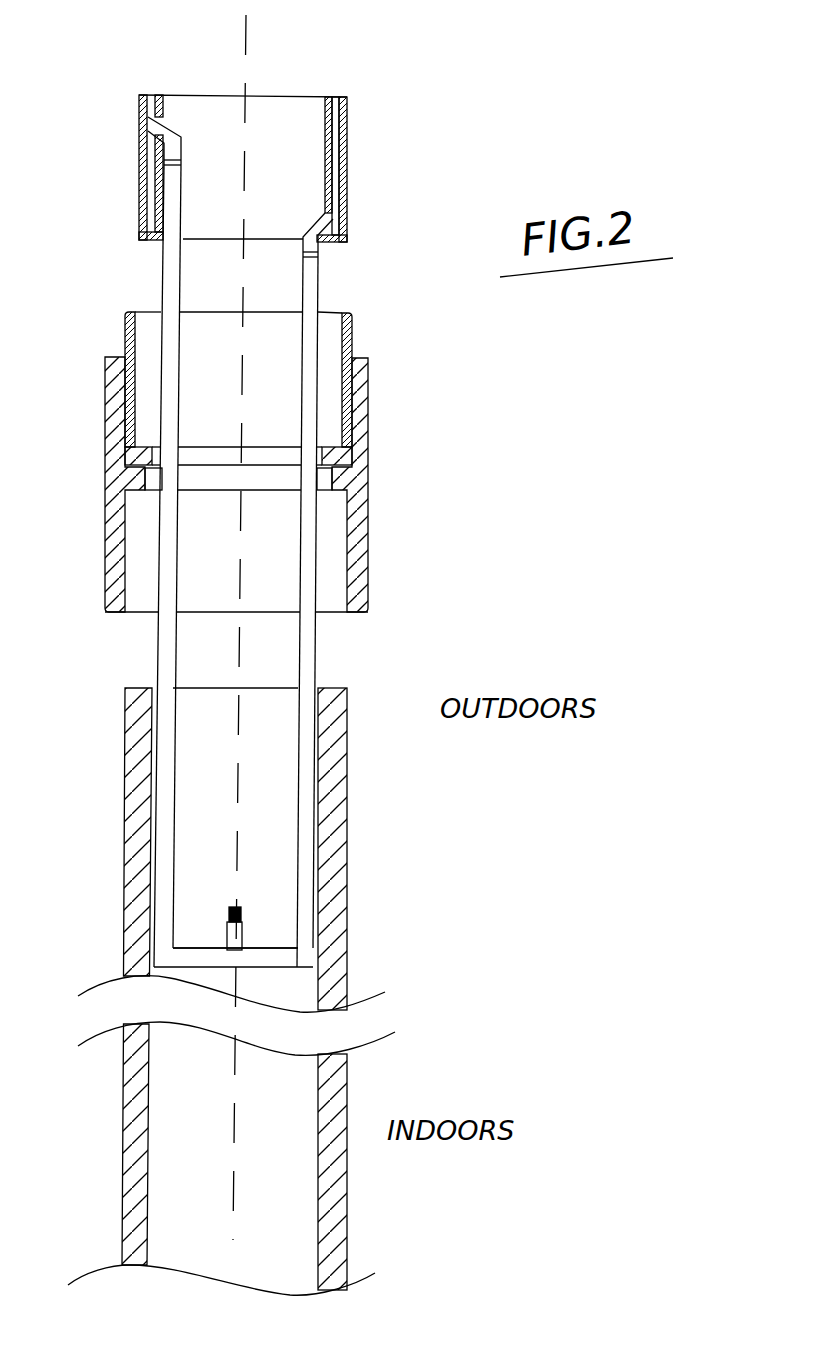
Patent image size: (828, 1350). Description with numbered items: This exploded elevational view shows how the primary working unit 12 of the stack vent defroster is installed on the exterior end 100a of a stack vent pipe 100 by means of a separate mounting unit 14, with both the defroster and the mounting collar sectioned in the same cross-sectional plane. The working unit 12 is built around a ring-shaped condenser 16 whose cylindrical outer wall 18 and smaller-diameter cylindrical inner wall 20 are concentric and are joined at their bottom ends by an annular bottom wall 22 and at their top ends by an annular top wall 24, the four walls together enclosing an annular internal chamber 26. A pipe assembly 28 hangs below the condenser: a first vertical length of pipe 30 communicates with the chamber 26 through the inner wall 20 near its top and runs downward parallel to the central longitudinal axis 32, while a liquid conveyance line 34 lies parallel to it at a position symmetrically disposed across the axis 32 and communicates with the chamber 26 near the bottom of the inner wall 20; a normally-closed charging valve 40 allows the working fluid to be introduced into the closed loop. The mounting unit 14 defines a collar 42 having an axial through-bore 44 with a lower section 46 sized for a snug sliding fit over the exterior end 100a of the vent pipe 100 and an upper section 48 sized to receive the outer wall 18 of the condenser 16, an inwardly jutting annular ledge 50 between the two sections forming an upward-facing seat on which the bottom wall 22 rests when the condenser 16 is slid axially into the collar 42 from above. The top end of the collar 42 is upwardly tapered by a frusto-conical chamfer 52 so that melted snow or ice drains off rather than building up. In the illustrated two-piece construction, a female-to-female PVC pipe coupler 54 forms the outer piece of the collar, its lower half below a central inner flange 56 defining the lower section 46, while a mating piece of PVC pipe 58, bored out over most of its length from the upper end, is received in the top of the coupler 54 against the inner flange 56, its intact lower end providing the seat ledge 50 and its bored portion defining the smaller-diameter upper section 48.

The primary working unit 12 is at (257, 171).
The mounting unit 14 is at (268, 442).
The ring-shaped condenser 16 is at (135, 125).
The cylindrical outer wall 18 is at (347, 212).
The cylindrical inner wall 20 is at (325, 123).
The annular bottom wall 22 is at (333, 242).
The annular top wall 24 is at (346, 87).
The annular internal chamber 26 is at (333, 198).
The pipe assembly 28 is at (318, 657).
The first vertical length of pipe 30 is at (167, 273).
The central longitudinal axis 32 is at (250, 35).
The liquid conveyance line 34 is at (318, 298).
The charging valve 40 is at (235, 932).
The collar 42 is at (368, 483).
The axial through-bore 44 is at (280, 592).
The lower section 46 is at (215, 597).
The upper section 48 is at (197, 335).
The annular ledge 50 is at (145, 443).
The frusto-conical chamfer 52 is at (132, 315).
The PVC pipe coupler 54 is at (365, 525).
The inner flange 56 is at (133, 482).
The mating piece of PVC pipe 58 is at (347, 345).
The stack vent pipe 100 is at (256, 971).
The exterior end 100a is at (135, 688).